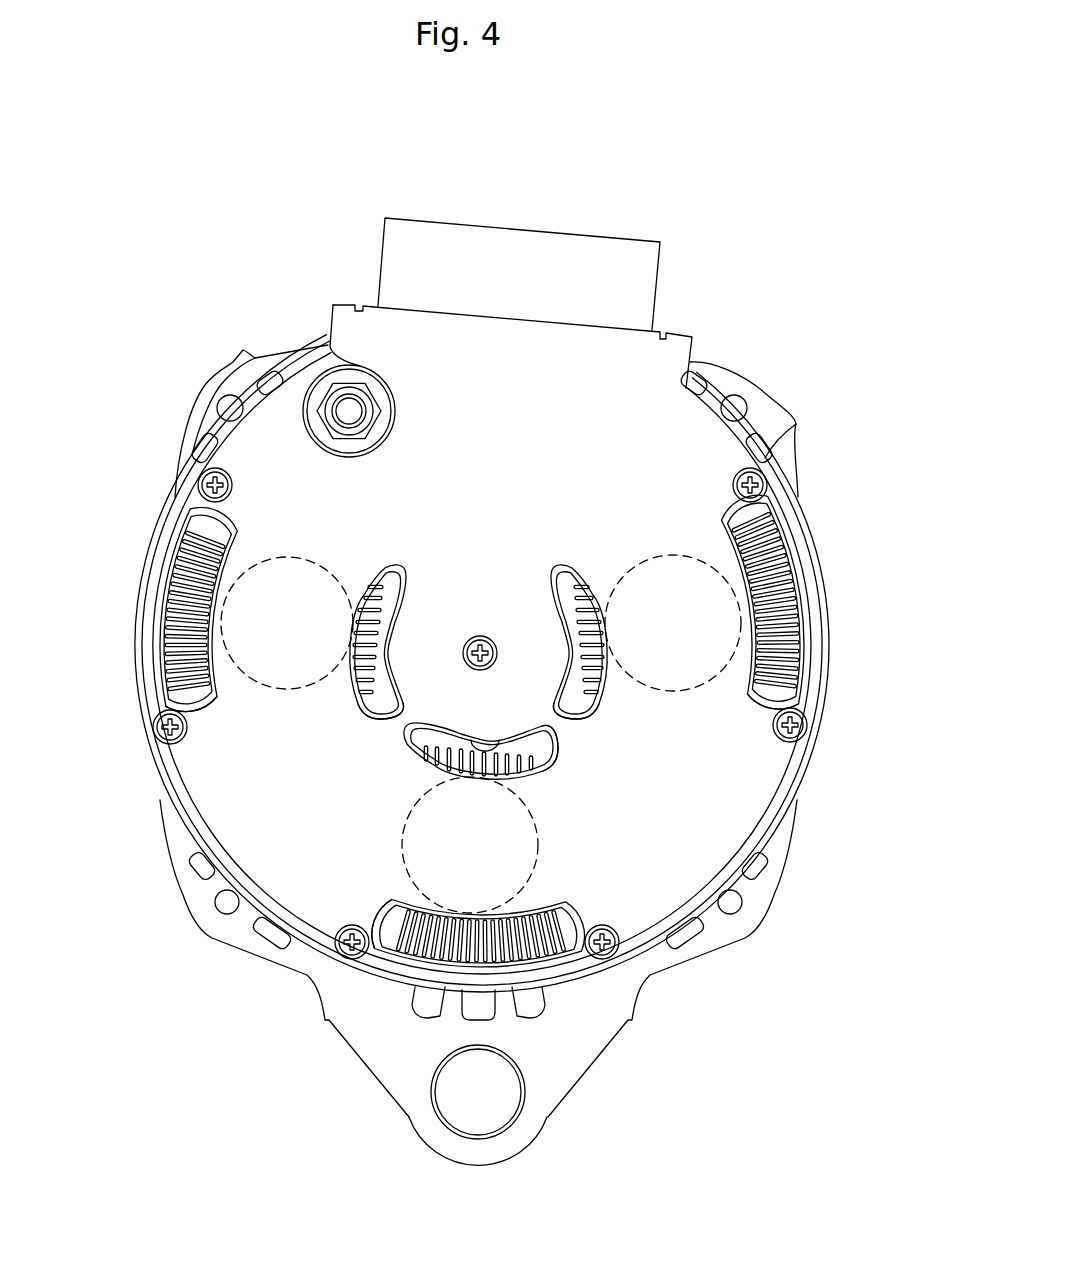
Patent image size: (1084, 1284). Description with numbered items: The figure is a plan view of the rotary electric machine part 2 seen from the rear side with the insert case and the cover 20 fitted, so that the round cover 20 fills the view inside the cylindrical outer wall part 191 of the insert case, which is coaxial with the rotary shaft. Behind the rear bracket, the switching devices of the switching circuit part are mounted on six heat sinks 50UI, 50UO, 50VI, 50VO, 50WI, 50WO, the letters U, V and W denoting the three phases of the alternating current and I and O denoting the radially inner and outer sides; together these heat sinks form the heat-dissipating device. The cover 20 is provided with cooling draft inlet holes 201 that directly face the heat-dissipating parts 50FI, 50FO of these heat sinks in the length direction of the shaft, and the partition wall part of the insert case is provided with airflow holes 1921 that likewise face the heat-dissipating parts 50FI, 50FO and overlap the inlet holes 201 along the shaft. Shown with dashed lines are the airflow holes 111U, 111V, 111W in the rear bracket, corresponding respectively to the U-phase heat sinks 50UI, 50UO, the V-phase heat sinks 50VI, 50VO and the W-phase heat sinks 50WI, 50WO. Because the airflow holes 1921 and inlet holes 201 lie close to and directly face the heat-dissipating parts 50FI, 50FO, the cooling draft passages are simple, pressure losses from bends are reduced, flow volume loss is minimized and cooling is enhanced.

The rotary electric machine part 2 is at (715, 353).
The cover 20 is at (230, 793).
The outer wall part 191 is at (800, 546).
The cooling draft inlet holes 201 is at (508, 781).
The airflow holes 1921 is at (200, 693).
The airflow hole 111W is at (315, 560).
The airflow hole 111U is at (633, 560).
The airflow hole 111V is at (545, 848).
The heat-dissipating part 50FO is at (190, 546).
The heat-dissipating part 50FI is at (357, 632).
The heat sink 50WO is at (192, 690).
The heat sink 50WI is at (392, 588).
The heat sink 50UO is at (773, 680).
The heat sink 50UI is at (553, 600).
The heat sink 50VO is at (415, 957).
The heat sink 50VI is at (525, 743).